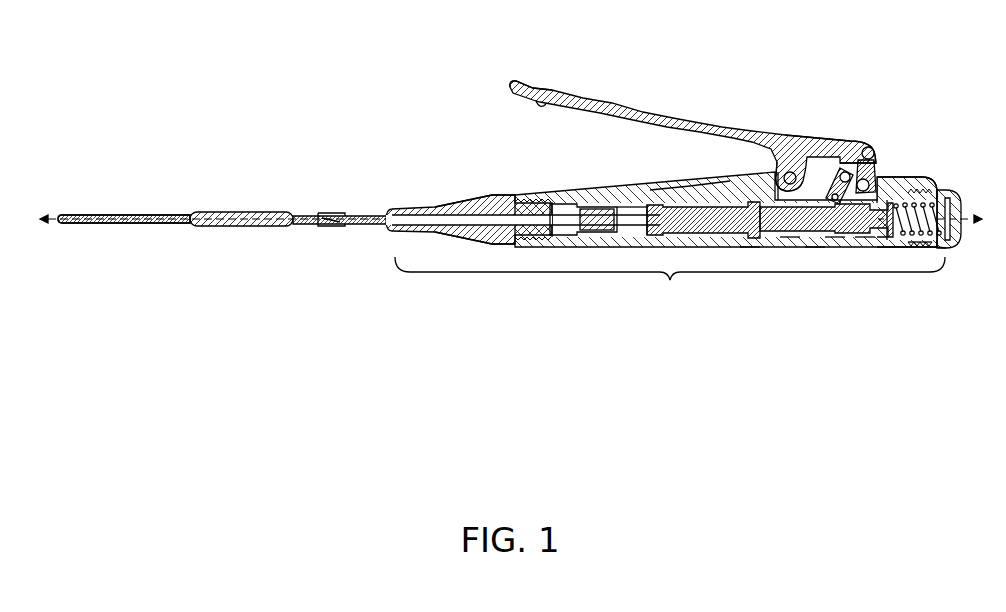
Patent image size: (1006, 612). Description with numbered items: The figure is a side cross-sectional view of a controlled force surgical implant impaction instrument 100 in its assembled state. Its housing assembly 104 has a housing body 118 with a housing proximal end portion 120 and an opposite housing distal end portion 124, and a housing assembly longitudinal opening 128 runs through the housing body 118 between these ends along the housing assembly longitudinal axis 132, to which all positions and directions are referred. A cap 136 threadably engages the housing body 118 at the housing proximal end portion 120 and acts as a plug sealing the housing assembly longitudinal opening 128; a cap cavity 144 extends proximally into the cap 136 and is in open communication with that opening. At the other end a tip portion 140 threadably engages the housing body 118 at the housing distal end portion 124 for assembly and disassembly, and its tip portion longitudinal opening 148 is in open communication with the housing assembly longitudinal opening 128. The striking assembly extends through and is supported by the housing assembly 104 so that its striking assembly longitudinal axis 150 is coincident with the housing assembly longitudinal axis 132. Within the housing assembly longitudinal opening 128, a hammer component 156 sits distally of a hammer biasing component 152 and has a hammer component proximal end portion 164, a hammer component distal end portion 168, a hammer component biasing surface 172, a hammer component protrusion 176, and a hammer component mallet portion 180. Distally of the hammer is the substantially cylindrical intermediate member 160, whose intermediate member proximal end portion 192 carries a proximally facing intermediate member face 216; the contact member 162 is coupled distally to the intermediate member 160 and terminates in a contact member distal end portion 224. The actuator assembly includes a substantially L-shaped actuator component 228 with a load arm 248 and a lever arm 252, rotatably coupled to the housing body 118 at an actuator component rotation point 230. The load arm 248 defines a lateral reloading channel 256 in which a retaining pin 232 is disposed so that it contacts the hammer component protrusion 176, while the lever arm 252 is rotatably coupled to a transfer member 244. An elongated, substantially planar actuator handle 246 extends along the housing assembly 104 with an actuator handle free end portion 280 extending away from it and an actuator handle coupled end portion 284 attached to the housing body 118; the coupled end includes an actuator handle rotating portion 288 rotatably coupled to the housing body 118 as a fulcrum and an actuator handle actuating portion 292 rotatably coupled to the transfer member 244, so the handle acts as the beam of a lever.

The instrument 100 is at (242, 83).
The housing assembly 104 is at (670, 234).
The housing body 118 is at (668, 187).
The housing proximal end portion 120 is at (915, 180).
The housing distal end portion 124 is at (540, 193).
The housing assembly longitudinal opening 128 is at (760, 248).
The housing assembly longitudinal axis 132 is at (590, 205).
The cap 136 is at (961, 236).
The tip portion 140 is at (487, 237).
The cap cavity 144 is at (943, 250).
The tip portion longitudinal opening 148 is at (478, 196).
The striking assembly longitudinal axis 150 is at (215, 228).
The hammer biasing component 152 is at (918, 248).
The hammer component 156 is at (815, 250).
The intermediate member 160 is at (445, 210).
The contact member 162 is at (270, 228).
The hammer component proximal end portion 164 is at (862, 242).
The hammer component distal end portion 168 is at (635, 192).
The hammer component biasing surface 172 is at (895, 238).
The hammer component protrusion 176 is at (832, 242).
The hammer component mallet portion 180 is at (700, 180).
The intermediate member proximal end portion 192 is at (630, 240).
The intermediate member face 216 is at (617, 200).
The contact member distal end portion 224 is at (63, 228).
The actuator component 228 is at (858, 165).
The actuator component rotation point 230 is at (845, 171).
The retaining pin 232 is at (790, 240).
The transfer member 244 is at (872, 178).
The actuator handle 246 is at (688, 117).
The load arm 248 is at (932, 197).
The lever arm 252 is at (873, 160).
The reloading channel 256 is at (740, 250).
The actuator handle free end portion 280 is at (553, 88).
The actuator handle coupled end portion 284 is at (800, 138).
The actuator handle rotating portion 288 is at (778, 162).
The actuator handle actuating portion 292 is at (875, 148).